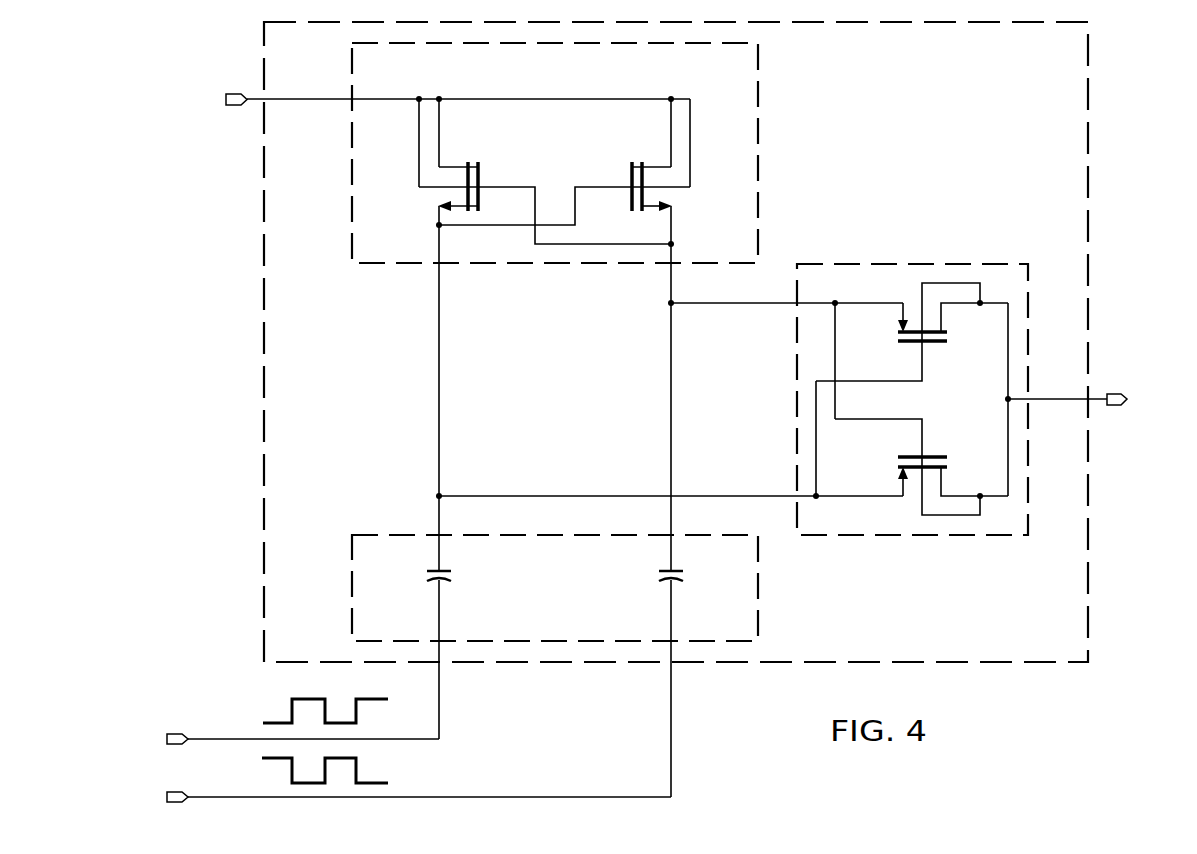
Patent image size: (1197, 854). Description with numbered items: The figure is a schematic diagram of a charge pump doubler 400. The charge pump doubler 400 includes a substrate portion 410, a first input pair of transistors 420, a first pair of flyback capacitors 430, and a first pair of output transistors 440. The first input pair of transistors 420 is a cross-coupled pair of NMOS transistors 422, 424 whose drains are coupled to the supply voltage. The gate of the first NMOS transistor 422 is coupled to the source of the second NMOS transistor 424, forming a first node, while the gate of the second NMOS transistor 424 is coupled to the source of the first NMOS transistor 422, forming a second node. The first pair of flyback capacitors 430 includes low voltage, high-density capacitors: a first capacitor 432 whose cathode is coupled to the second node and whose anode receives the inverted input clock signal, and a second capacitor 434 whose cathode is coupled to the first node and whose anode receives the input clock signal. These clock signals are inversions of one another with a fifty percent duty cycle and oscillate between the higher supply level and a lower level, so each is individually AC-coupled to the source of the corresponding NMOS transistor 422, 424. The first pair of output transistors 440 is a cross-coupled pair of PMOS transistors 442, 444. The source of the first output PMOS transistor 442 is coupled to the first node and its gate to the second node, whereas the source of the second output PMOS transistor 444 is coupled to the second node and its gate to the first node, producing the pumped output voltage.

The charge pump doubler 400 is at (164, 305).
The substrate portion 410 is at (257, 177).
The first input pair of transistors 420 is at (343, 69).
The first NMOS transistor 422 is at (481, 175).
The second NMOS transistor 424 is at (629, 175).
The first pair of flyback capacitors 430 is at (344, 610).
The first capacitor 432 is at (427, 574).
The second capacitor 434 is at (683, 574).
The first pair of output transistors 440 is at (937, 546).
The first output PMOS transistor 442 is at (932, 344).
The second output PMOS transistor 444 is at (932, 455).